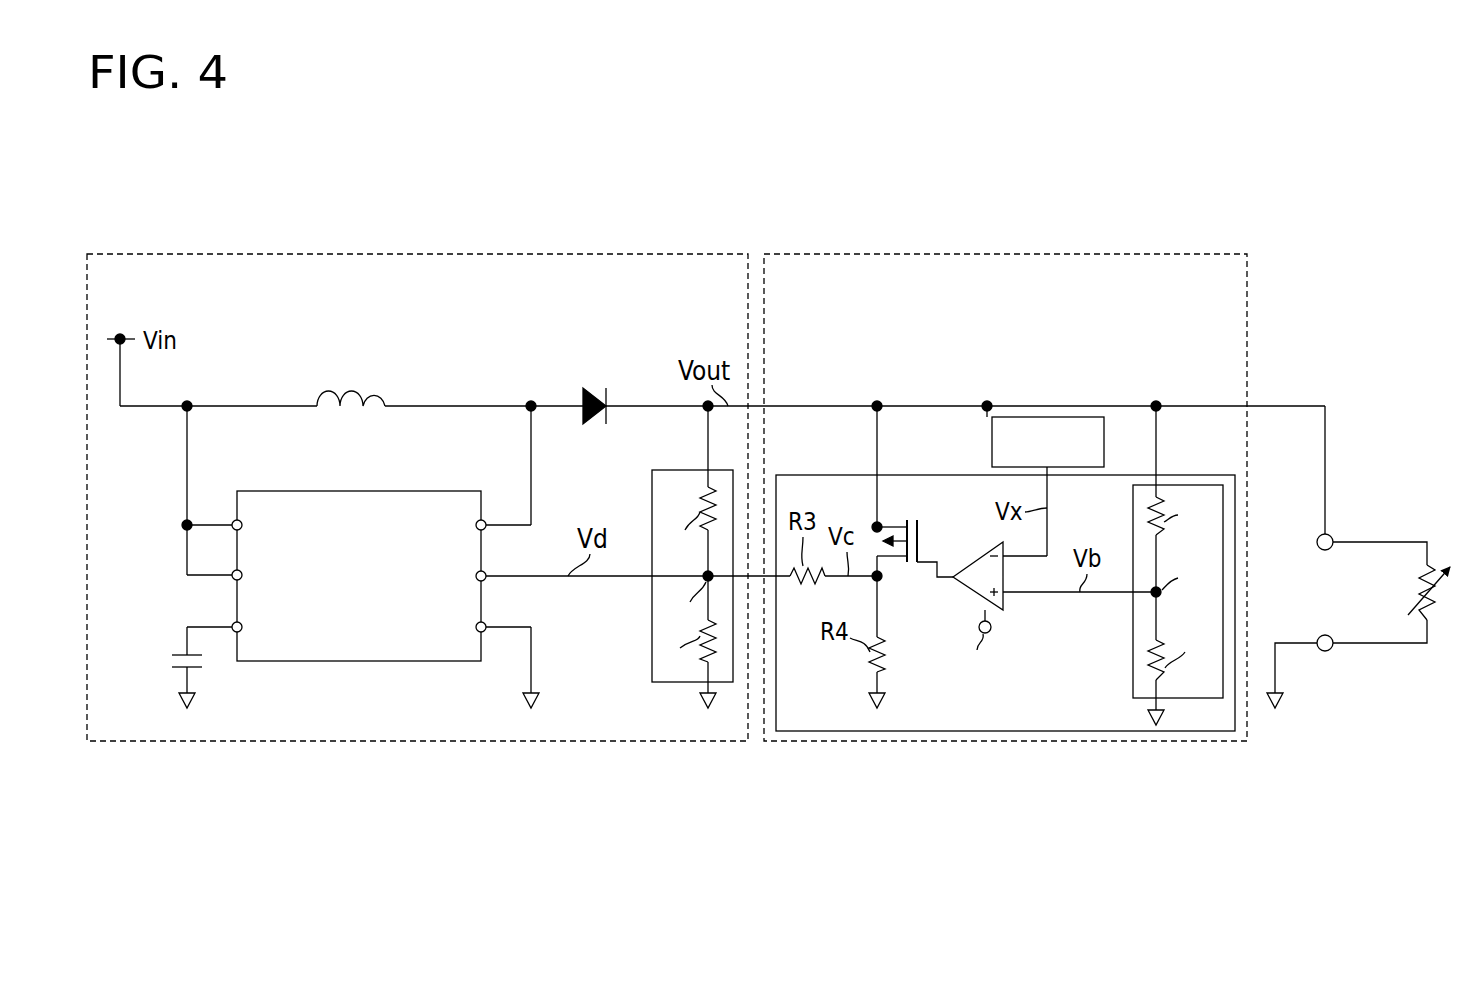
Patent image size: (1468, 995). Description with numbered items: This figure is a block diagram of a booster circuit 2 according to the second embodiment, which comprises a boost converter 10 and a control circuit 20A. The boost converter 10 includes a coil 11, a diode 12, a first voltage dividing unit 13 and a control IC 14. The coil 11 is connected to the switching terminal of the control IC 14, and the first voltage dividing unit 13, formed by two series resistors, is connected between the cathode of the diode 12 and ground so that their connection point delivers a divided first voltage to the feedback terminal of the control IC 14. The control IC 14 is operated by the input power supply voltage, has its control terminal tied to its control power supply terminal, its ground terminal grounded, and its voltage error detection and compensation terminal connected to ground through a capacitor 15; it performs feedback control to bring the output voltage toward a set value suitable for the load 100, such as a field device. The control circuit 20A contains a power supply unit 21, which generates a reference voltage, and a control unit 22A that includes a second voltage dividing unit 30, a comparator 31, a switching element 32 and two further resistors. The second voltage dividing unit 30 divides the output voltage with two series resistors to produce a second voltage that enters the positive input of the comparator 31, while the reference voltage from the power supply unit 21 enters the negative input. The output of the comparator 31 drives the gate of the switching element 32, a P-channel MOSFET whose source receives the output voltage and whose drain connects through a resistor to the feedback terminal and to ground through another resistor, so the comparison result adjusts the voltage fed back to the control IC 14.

The booster circuit 2 is at (160, 145).
The boost converter 10 is at (433, 254).
The coil 11 is at (350, 380).
The diode 12 is at (595, 392).
The first voltage dividing unit 13 is at (676, 470).
The control IC 14 is at (365, 491).
The capacitor 15 is at (178, 655).
The control circuit 20A is at (995, 254).
The power supply unit 21 is at (1048, 417).
The control unit 22A is at (840, 475).
The second voltage dividing unit 30 is at (1133, 517).
The comparator 31 is at (975, 560).
The switching element 32 is at (910, 522).
The load 100 is at (1412, 600).